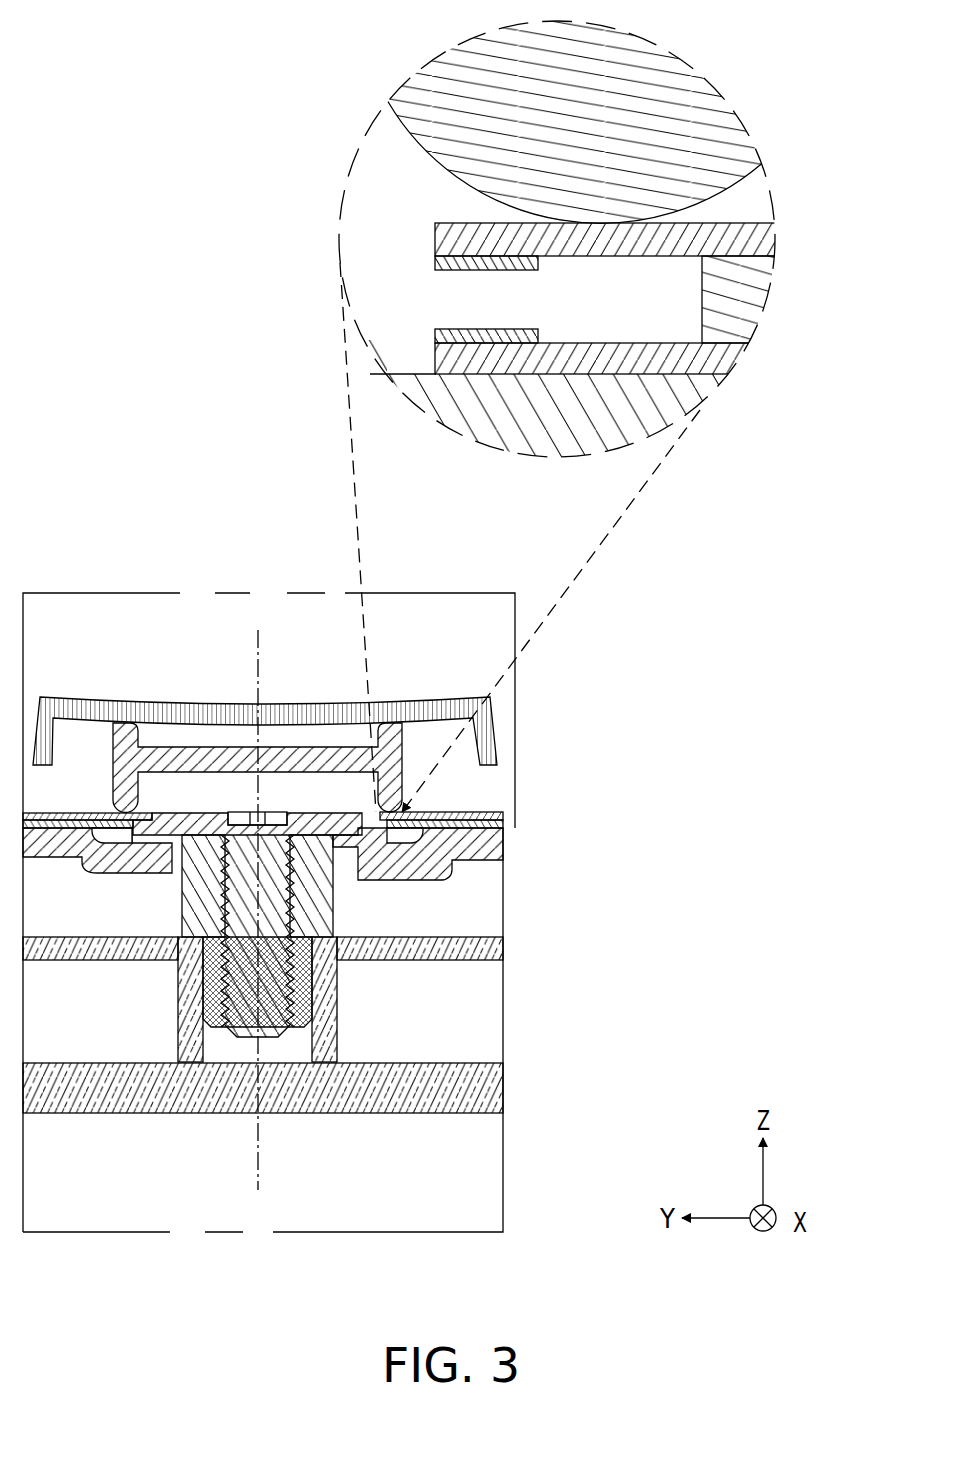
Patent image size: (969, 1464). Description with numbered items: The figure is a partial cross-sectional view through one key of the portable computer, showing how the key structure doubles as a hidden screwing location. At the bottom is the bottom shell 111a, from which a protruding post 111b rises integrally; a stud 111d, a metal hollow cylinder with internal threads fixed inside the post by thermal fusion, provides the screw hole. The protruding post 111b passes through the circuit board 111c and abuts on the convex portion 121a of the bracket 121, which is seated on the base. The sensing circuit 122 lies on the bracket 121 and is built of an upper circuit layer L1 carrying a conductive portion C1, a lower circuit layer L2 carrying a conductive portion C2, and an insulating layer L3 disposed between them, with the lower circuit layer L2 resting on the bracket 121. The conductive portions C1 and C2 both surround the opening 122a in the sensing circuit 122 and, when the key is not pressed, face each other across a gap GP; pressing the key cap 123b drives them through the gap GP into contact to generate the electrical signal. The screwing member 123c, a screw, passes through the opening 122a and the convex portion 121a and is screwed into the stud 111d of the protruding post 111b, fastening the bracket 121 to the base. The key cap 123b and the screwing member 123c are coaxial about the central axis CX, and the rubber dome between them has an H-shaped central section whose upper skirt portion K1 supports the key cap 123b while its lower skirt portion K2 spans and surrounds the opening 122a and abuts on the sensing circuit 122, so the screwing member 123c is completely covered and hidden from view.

The sensing circuit 122 is at (490, 815).
The upper circuit layer L1 is at (455, 230).
The lower circuit layer L2 is at (447, 362).
The insulating layer L3 is at (728, 320).
The conductive portion C1 is at (437, 268).
The conductive portion C2 is at (437, 333).
The lower skirt portion K2 is at (453, 87).
The upper skirt portion K1 is at (115, 727).
The opening 122a is at (430, 238).
The gap GP is at (462, 301).
The bracket 121 is at (421, 678).
The convex portion 121a is at (178, 890).
The key cap 123b is at (497, 733).
The screwing member 123c is at (186, 812).
The central axis CX is at (262, 648).
The bottom shell 111a is at (422, 1095).
The protruding post 111b is at (322, 1000).
The circuit board 111c is at (494, 950).
The stud 111d is at (302, 978).